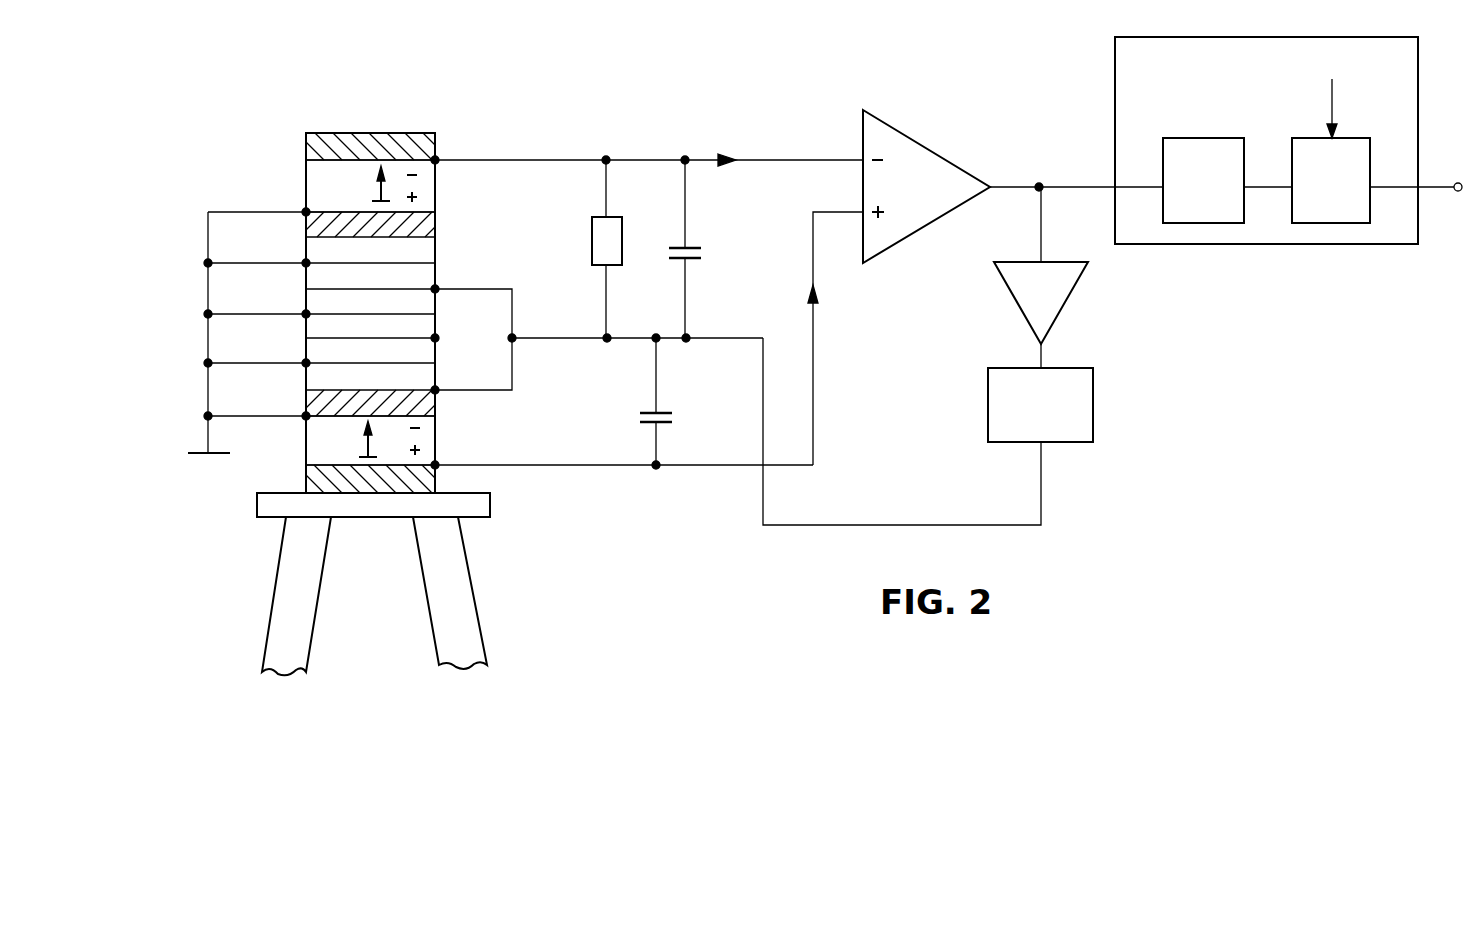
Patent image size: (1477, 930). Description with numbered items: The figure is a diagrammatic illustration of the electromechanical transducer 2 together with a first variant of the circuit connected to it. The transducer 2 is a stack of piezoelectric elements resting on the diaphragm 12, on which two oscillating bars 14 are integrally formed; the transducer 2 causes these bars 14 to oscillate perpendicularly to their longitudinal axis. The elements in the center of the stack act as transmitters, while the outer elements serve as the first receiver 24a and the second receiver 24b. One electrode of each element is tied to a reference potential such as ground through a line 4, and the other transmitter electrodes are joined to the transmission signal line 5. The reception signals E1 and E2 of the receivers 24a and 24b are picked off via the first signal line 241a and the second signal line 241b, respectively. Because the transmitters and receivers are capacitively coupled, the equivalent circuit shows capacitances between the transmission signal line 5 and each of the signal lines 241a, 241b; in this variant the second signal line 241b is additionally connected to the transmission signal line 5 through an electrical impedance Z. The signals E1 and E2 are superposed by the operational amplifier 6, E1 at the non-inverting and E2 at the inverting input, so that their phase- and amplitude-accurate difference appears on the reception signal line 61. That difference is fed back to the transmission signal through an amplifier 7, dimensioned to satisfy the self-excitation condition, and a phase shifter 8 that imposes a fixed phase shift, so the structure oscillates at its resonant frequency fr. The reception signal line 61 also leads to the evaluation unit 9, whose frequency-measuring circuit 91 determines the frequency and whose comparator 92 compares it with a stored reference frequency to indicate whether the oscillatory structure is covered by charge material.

The electromechanical transducer 2 is at (316, 120).
The second receiver 24b is at (318, 188).
The first receiver 24a is at (318, 447).
The line 4 is at (228, 212).
The transmission signal line 5 is at (557, 342).
The second signal line 241b is at (498, 160).
The first signal line 241a is at (556, 467).
The operational amplifier 6 is at (900, 133).
The reception signal line 61 is at (1008, 186).
The amplifier 7 is at (1060, 300).
The phase shifter 8 is at (1093, 383).
The evaluation unit 9 is at (1126, 67).
The frequency-measuring circuit 91 is at (1172, 148).
The comparator 92 is at (1357, 154).
The diaphragm 12 is at (377, 508).
The oscillating bars 14 is at (283, 602).
The electrical impedance Z is at (592, 240).
The reception signal E1 is at (832, 301).
The reception signal E2 is at (727, 144).
The resonant frequency fr is at (1344, 108).